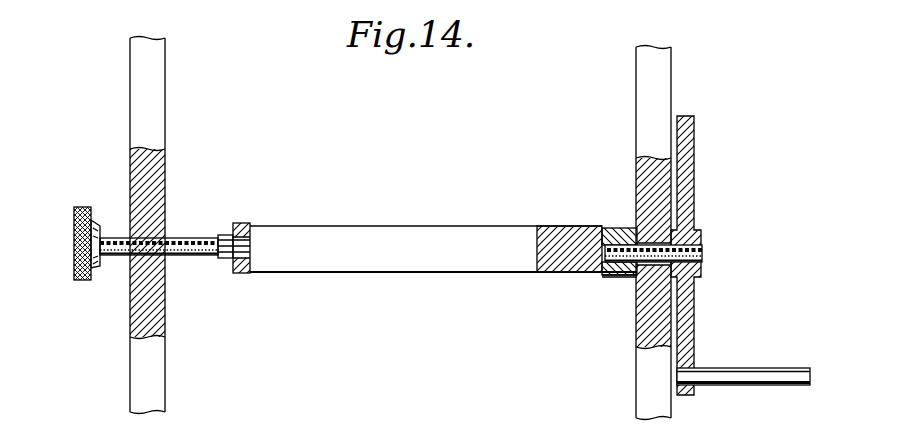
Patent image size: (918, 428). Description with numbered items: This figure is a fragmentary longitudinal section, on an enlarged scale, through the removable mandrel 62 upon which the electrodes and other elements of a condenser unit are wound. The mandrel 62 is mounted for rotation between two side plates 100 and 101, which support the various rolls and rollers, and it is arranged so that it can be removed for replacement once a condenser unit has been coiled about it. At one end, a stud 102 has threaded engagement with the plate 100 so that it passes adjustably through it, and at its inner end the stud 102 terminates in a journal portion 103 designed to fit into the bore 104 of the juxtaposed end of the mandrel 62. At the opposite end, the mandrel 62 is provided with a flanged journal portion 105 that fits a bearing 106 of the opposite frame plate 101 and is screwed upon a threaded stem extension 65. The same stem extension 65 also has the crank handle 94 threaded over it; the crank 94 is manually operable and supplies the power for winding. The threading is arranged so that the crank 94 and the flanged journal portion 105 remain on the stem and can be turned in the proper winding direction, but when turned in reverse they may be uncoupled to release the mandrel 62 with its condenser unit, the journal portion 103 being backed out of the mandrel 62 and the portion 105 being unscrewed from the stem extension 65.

The mandrel 62 is at (553, 237).
The threaded stem extension 65 is at (701, 253).
The crank handle 94 is at (742, 386).
The side plate 100 is at (148, 383).
The side plate 101 is at (646, 384).
The stud 102 is at (116, 257).
The journal portion 103 is at (250, 250).
The bore 104 is at (226, 260).
The flanged journal portion 105 is at (612, 273).
The bearing 106 is at (630, 278).